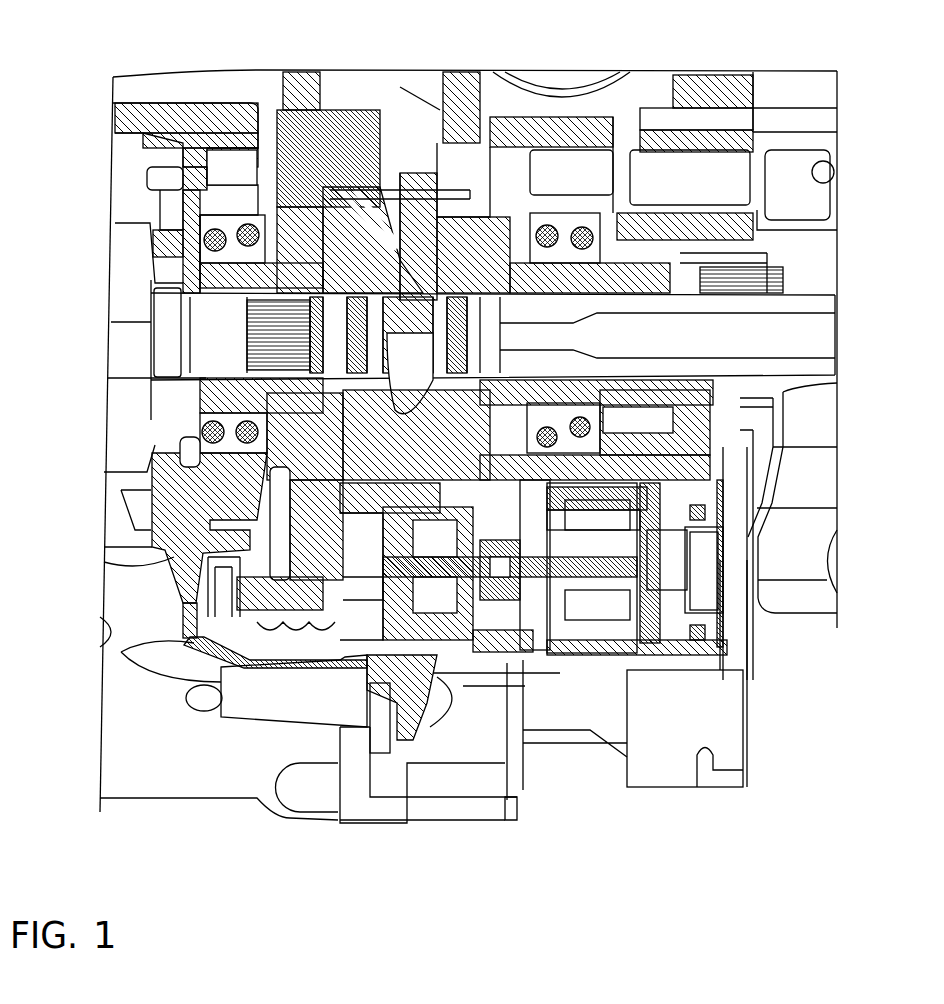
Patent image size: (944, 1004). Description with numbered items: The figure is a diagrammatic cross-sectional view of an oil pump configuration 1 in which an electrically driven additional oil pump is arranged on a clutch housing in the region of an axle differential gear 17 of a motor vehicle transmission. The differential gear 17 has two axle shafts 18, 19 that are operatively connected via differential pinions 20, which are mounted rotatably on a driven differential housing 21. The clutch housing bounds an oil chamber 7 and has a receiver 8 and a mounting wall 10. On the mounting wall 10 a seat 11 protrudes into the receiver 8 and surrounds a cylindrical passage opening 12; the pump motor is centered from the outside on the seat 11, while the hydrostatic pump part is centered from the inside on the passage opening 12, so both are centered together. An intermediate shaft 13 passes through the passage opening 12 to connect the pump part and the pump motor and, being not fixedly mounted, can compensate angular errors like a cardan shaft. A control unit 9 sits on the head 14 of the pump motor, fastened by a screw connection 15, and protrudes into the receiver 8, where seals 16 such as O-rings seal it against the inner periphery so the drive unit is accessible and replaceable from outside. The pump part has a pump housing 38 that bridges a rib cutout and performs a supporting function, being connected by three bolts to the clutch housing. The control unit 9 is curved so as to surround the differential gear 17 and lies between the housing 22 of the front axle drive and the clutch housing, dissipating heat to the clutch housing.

The oil pump configuration 1 is at (544, 668).
The oil chamber 7 is at (446, 648).
The receiver 8 is at (645, 652).
The control unit 9 is at (741, 658).
The mounting wall 10 is at (512, 662).
The seat 11 is at (615, 518).
The passage opening 12 is at (584, 654).
The intermediate shaft 13 is at (472, 648).
The head 14 is at (653, 610).
The screw connection 15 is at (705, 513).
The seals 16 is at (693, 664).
The differential gear 17 is at (474, 188).
The axle shaft 18 is at (273, 283).
The axle shaft 19 is at (602, 285).
The differential pinions 20 is at (375, 233).
The differential housing 21 is at (333, 157).
The housing of the front axle drive 22 is at (806, 570).
The pump housing 38 is at (372, 603).